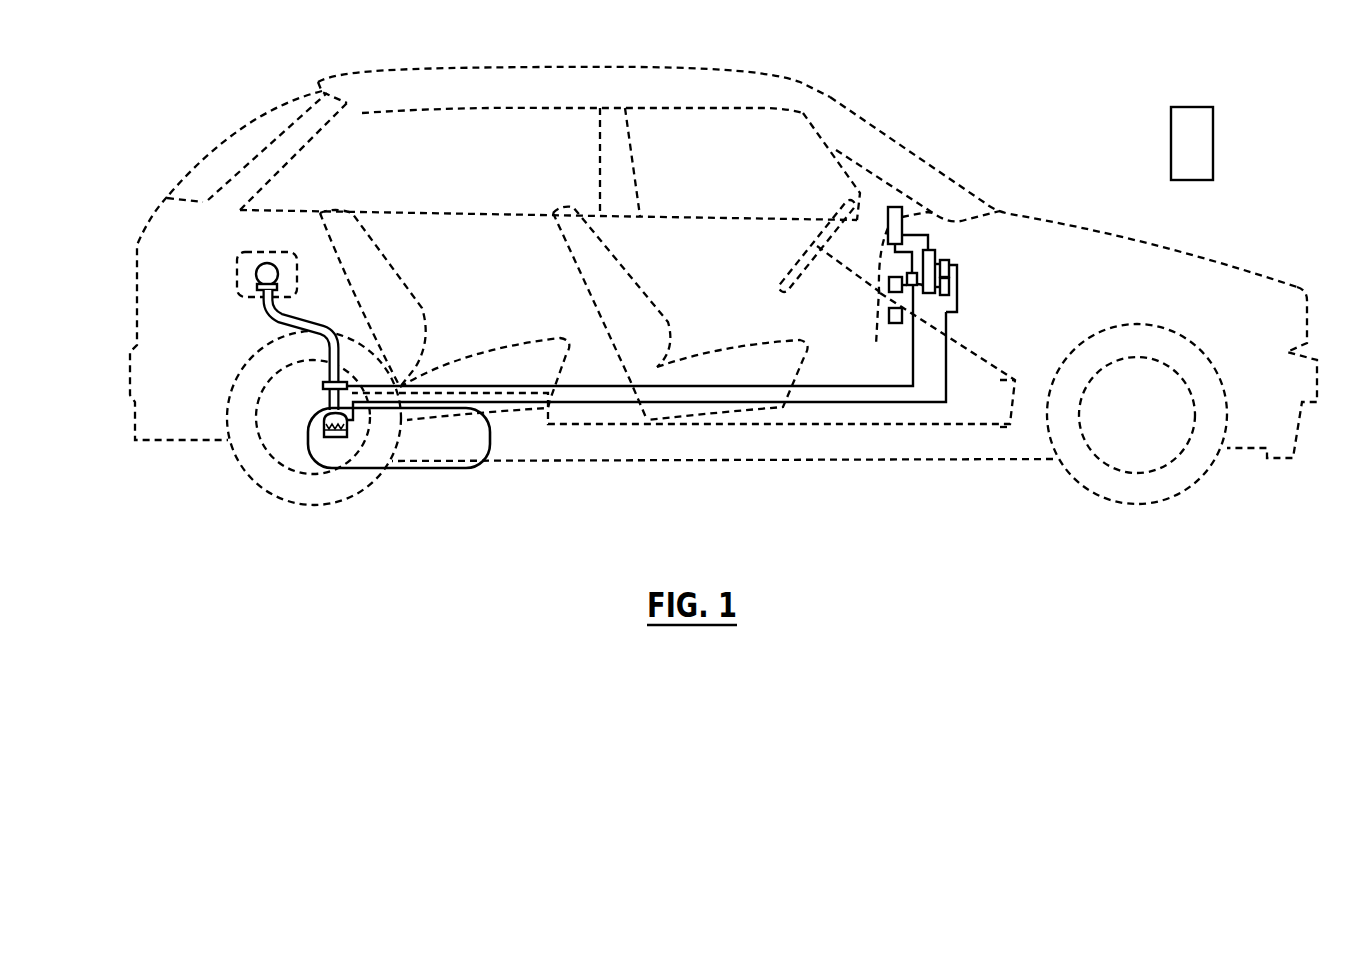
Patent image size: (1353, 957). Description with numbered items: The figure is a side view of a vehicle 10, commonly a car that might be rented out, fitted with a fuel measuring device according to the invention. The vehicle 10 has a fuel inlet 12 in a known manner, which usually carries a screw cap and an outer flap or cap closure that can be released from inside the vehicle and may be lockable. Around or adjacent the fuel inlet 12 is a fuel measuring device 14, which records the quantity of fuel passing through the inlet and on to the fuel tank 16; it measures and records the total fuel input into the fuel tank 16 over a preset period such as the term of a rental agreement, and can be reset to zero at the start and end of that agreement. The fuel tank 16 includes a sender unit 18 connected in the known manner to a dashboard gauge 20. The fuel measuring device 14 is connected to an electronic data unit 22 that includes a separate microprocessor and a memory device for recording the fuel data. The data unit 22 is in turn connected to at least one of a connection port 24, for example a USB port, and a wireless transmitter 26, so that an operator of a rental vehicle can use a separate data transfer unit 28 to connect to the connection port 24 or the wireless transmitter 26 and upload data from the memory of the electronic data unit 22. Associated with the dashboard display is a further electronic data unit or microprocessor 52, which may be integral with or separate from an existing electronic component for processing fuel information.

The vehicle 10 is at (899, 99).
The fuel inlet 12 is at (256, 268).
The fuel measuring device 14 is at (324, 388).
The fuel tank 16 is at (427, 468).
The sender unit 18 is at (328, 437).
The dashboard gauge 20 is at (897, 207).
The electronic data unit 22 is at (960, 295).
The connection port 24 is at (889, 287).
The wireless transmitter 26 is at (890, 324).
The data transfer unit 28 is at (1207, 154).
The electronic data unit 52 is at (936, 256).